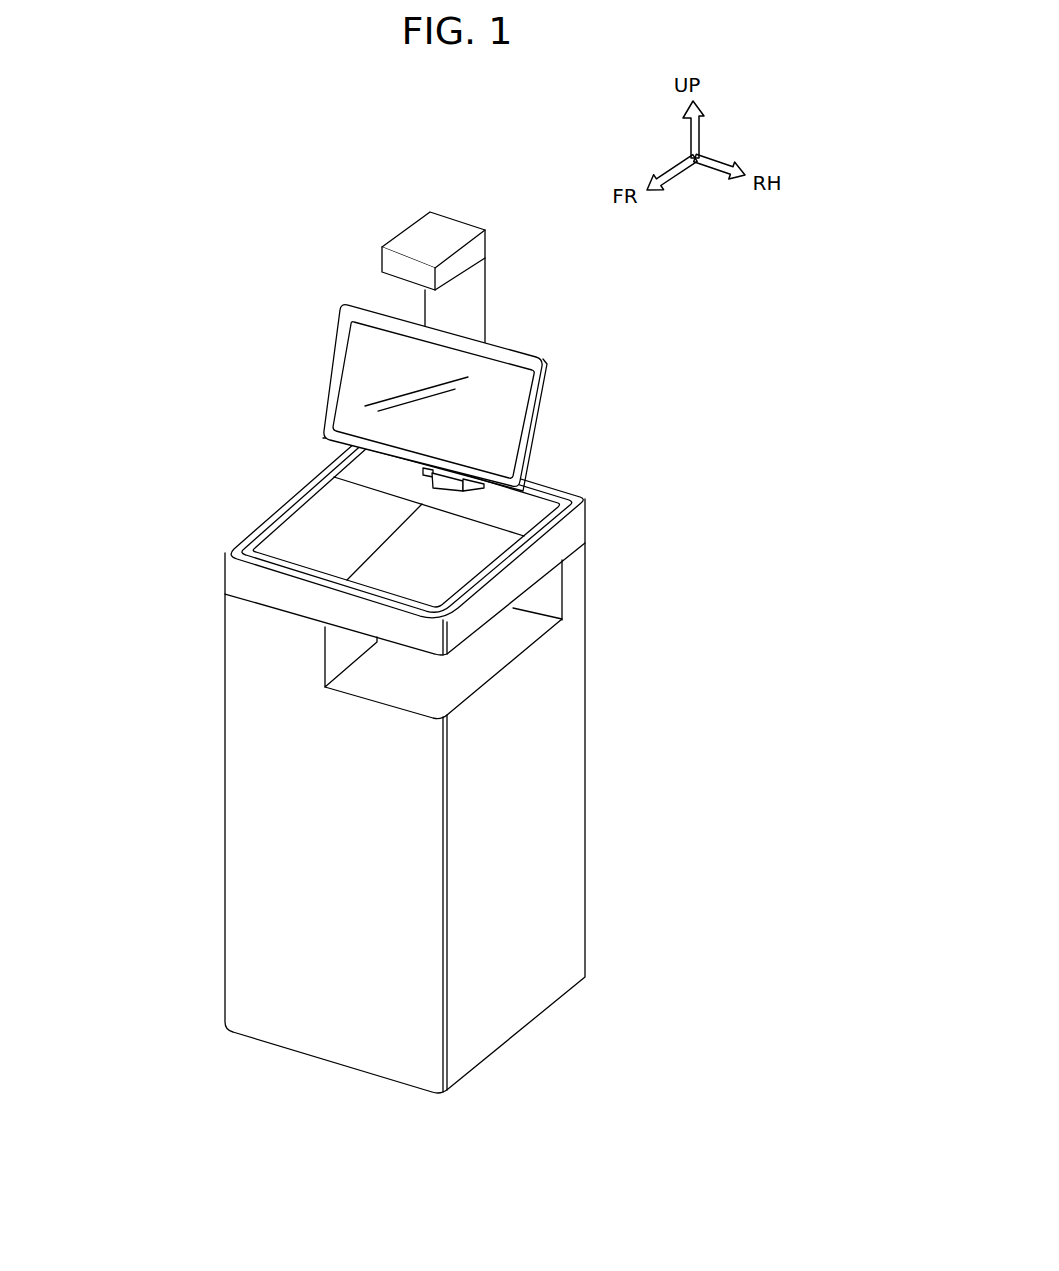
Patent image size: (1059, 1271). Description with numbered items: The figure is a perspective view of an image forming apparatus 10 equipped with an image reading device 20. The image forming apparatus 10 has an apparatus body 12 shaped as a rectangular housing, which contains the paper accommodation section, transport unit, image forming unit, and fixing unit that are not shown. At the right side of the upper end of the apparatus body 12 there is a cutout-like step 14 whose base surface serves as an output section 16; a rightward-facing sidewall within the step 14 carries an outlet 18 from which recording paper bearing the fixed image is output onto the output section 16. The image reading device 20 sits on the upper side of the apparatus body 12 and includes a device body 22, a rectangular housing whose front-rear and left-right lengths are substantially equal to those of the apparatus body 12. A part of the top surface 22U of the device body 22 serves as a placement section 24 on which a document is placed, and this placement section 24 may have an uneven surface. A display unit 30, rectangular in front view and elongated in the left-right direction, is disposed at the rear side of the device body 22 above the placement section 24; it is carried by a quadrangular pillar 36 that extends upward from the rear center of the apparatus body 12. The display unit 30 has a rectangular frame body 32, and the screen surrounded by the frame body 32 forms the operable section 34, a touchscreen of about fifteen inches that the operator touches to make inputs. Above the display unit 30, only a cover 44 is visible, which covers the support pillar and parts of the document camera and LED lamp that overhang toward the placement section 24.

The image forming apparatus 10 is at (410, 796).
The apparatus body 12 is at (260, 823).
The step 14 is at (410, 692).
The output section 16 is at (467, 668).
The outlet 18 is at (336, 636).
The image reading device 20 is at (243, 533).
The device body 22 is at (466, 544).
The top surface 22U is at (555, 493).
The placement section 24 is at (320, 524).
The display unit 30 is at (471, 353).
The frame body 32 is at (533, 373).
The operable section 34 is at (497, 377).
The pillar 36 is at (438, 490).
The cover 44 is at (445, 232).